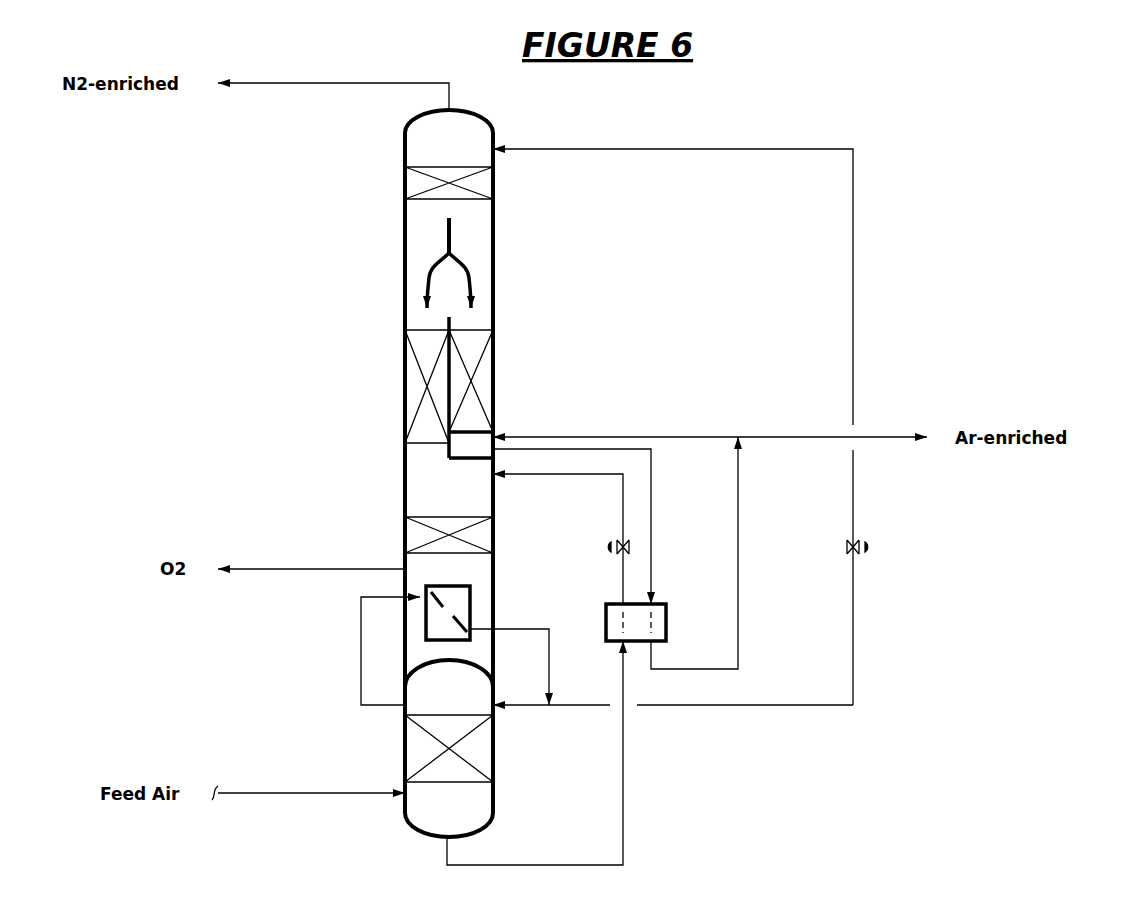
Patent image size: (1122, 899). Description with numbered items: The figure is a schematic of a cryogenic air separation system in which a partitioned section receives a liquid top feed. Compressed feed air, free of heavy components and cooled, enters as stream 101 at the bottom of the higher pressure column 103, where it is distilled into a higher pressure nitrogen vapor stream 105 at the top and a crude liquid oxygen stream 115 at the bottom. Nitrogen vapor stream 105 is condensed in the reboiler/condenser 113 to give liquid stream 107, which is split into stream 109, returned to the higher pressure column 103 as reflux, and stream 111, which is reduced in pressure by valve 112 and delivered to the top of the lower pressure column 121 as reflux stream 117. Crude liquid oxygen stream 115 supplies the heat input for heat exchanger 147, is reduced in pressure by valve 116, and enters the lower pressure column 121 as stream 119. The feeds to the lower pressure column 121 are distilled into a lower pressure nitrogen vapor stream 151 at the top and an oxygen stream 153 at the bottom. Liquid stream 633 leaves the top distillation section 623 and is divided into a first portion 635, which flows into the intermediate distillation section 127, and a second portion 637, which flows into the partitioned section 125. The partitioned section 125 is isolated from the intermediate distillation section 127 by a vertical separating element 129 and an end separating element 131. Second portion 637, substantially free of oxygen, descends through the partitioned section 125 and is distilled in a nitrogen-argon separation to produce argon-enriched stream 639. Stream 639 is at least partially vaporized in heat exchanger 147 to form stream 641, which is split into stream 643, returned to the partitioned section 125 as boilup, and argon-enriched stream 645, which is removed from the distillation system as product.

The lower pressure column 121 is at (405, 148).
The top distillation section 623 is at (415, 183).
The liquid stream 633 is at (449, 235).
The first portion 635 is at (430, 280).
The second portion 637 is at (470, 280).
The vertical separating element 129 is at (449, 324).
The intermediate distillation section 127 is at (415, 400).
The partitioned section 125 is at (483, 388).
The end separating element 131 is at (462, 460).
The higher pressure column 103 is at (493, 750).
The lower pressure nitrogen vapor stream 151 is at (262, 84).
The reflux stream 117 is at (566, 150).
The stream 643 is at (592, 436).
The argon-enriched stream 645 is at (762, 436).
The argon-enriched stream 639 is at (672, 527).
The stream 641 is at (760, 559).
The stream 119 is at (522, 512).
The valve 116 is at (611, 547).
The valve 112 is at (895, 541).
The heat exchanger 147 is at (688, 614).
The crude liquid oxygen stream 115 is at (503, 866).
The stream 111 is at (870, 665).
The stream 109 is at (519, 705).
The liquid stream 107 is at (518, 628).
The higher pressure nitrogen vapor stream 105 is at (361, 672).
The reboiler/condenser 113 is at (470, 605).
The oxygen stream 153 is at (262, 572).
The feed air stream 101 is at (310, 818).